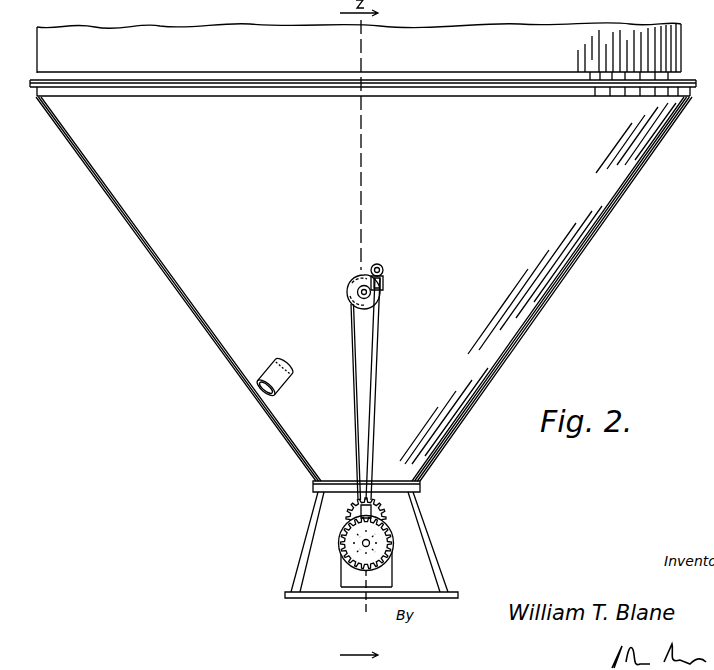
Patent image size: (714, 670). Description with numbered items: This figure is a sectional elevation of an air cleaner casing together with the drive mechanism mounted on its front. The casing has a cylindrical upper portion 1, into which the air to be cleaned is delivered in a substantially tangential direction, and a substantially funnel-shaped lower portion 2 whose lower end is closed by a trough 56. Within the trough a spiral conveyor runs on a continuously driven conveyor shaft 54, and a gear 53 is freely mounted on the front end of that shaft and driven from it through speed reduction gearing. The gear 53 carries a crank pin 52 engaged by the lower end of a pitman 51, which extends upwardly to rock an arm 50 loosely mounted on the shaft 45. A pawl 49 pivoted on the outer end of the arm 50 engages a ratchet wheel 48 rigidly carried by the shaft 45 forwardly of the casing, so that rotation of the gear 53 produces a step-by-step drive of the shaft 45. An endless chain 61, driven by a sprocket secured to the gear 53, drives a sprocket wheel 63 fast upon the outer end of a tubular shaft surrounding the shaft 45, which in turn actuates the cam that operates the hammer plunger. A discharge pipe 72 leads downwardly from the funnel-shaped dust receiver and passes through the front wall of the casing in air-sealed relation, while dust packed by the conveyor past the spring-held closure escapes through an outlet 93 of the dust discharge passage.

The cylindrical upper portion of casing 1 is at (486, 43).
The funnel-shaped lower portion of casing 2 is at (174, 298).
The shaft 45 is at (350, 292).
The ratchet wheel 48 is at (358, 278).
The pawl 49 is at (385, 276).
The arm 50 is at (377, 265).
The pitman 51 is at (381, 372).
The crank pin 52 is at (385, 513).
The gear 53 is at (388, 542).
The conveyor shaft 54 is at (360, 545).
The trough 56 is at (398, 562).
The endless chain 61 is at (352, 370).
The sprocket wheel 63 is at (350, 304).
The discharge pipe 72 is at (275, 358).
The outlet 93 is at (352, 577).